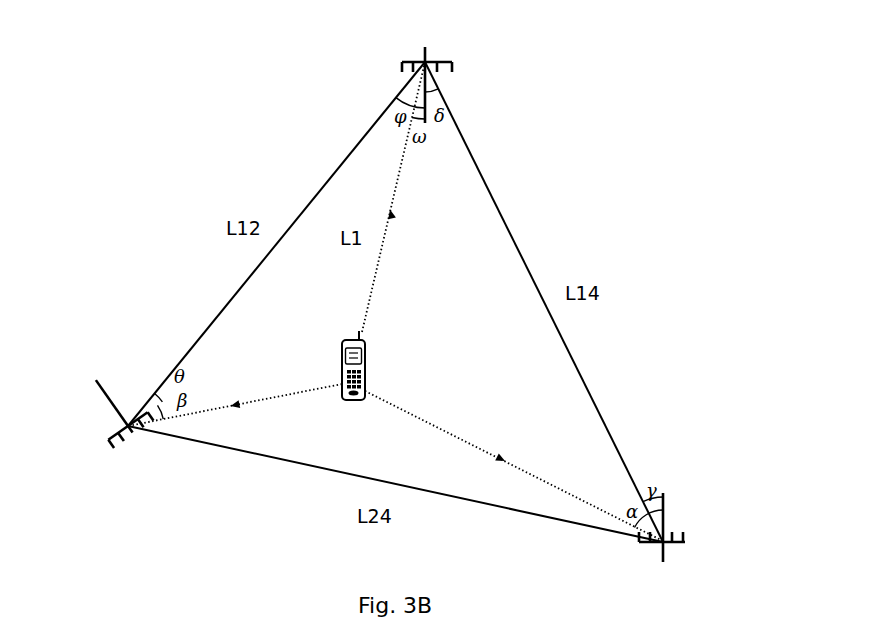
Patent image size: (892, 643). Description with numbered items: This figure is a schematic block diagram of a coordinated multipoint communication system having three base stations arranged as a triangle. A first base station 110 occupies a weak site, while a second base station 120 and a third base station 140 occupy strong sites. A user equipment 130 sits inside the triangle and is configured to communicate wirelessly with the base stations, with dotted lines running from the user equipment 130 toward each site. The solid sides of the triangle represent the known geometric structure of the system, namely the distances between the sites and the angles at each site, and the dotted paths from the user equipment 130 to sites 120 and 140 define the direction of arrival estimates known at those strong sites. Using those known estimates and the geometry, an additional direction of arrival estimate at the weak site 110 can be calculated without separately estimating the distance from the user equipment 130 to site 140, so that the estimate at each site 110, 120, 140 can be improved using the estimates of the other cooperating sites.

The third base station 140 is at (436, 67).
The second base station 120 is at (108, 421).
The first base station 110 is at (684, 552).
The user equipment 130 is at (393, 365).